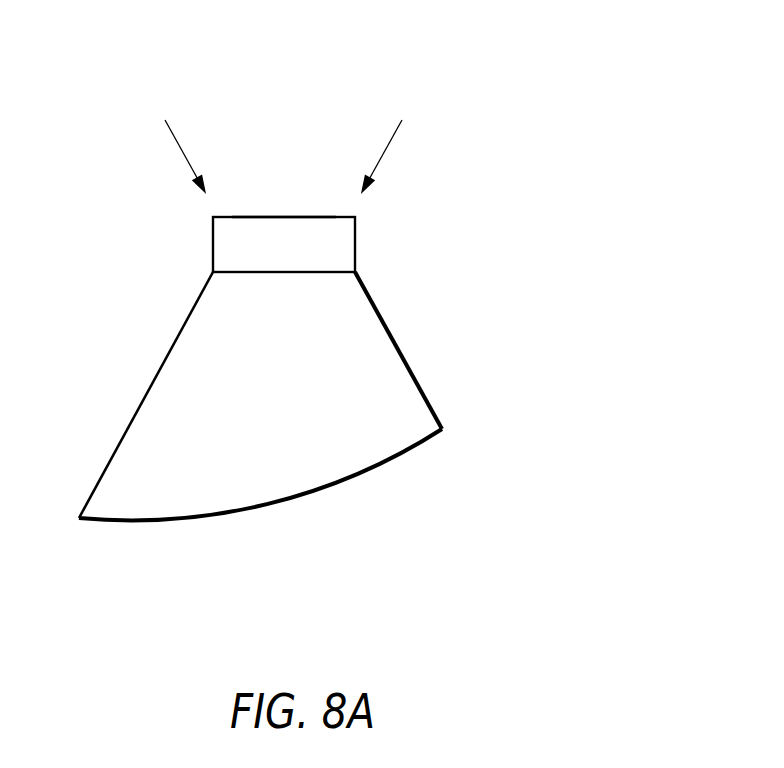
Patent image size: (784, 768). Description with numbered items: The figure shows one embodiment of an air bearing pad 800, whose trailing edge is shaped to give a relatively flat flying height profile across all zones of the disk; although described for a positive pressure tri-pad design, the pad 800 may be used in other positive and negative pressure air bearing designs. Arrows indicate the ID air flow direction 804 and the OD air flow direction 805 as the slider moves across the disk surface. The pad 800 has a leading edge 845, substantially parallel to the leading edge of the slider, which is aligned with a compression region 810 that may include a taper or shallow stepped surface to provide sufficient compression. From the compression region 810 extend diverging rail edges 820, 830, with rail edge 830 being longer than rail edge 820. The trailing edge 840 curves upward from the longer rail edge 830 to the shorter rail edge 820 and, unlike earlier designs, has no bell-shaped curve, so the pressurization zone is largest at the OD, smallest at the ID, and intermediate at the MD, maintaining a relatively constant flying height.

The air bearing pad 800 is at (585, 167).
The ID air flow direction arrow 804 is at (411, 105).
The OD air flow direction arrow 805 is at (155, 105).
The compression region 810 is at (355, 243).
The rail edge 820 is at (423, 389).
The rail edge 830 is at (117, 448).
The trailing edge 840 is at (299, 556).
The leading edge 845 is at (282, 227).